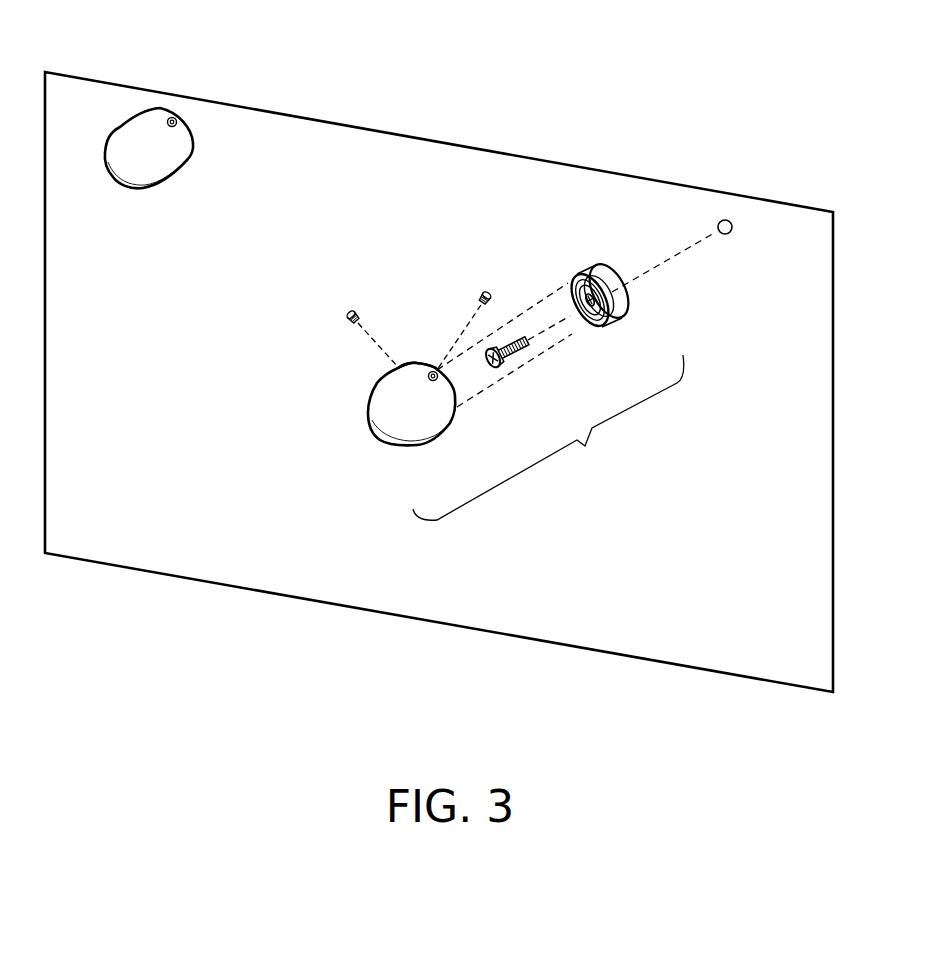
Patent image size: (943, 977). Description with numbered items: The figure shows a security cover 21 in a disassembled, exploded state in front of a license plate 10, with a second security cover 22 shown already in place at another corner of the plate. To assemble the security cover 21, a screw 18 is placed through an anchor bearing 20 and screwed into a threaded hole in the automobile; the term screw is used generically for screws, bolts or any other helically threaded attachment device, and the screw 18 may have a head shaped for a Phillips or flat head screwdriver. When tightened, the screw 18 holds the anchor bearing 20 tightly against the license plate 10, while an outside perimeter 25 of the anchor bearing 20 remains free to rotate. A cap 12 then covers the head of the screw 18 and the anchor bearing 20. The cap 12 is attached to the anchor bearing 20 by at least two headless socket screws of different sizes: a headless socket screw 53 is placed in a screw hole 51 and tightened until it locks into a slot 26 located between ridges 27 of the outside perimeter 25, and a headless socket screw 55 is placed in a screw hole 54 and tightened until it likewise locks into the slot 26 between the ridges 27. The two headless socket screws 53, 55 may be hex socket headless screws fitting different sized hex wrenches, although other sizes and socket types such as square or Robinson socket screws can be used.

The license plate 10 is at (117, 552).
The cap 12 is at (392, 398).
The screw 18 is at (517, 352).
The anchor bearing 20 is at (565, 316).
The security cover 21 is at (548, 437).
The security cover 22 is at (88, 122).
The outside perimeter 25 is at (587, 322).
The slot 26 is at (617, 318).
The ridges 27 is at (567, 268).
The screw hole 51 is at (398, 368).
The headless socket screw 53 is at (350, 314).
The screw hole 54 is at (482, 296).
The headless socket screw 55 is at (432, 371).